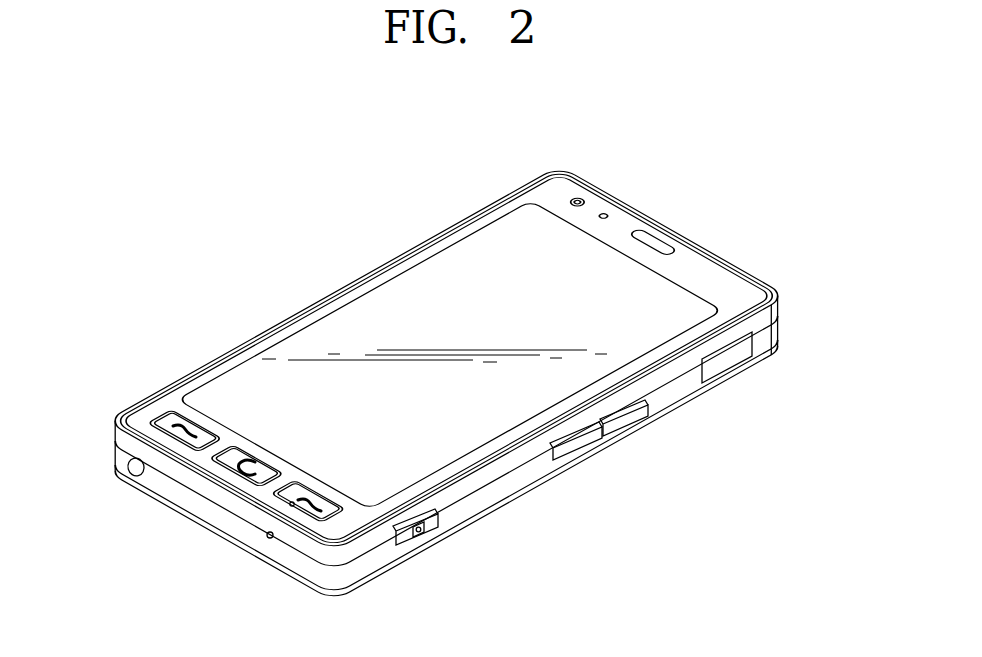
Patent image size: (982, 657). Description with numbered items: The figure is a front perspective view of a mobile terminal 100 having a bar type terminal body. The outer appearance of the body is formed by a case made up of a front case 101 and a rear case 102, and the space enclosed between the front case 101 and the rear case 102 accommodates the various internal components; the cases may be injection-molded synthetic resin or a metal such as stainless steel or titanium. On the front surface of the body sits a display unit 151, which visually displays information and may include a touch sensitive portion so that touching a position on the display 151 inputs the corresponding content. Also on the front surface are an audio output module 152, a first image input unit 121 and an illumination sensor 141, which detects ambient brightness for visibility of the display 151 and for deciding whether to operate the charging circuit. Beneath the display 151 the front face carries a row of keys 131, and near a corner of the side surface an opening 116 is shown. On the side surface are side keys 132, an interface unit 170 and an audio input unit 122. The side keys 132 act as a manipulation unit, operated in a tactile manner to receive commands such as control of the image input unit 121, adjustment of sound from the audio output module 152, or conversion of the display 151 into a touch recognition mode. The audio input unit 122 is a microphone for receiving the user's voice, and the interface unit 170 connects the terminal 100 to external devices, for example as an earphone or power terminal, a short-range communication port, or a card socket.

The mobile terminal 100 is at (300, 281).
The front case 101 is at (771, 320).
The rear case 102 is at (771, 342).
The display unit 151 is at (277, 351).
The manipulation unit (keys) 131 is at (162, 420).
The first image input unit 121 is at (584, 201).
The illumination sensor 141 is at (608, 216).
The audio output module 152 is at (663, 243).
The interface unit 170 is at (727, 360).
The side keys 132 is at (580, 445).
The earphone jack 116 is at (131, 473).
The audio input unit 122 is at (267, 538).